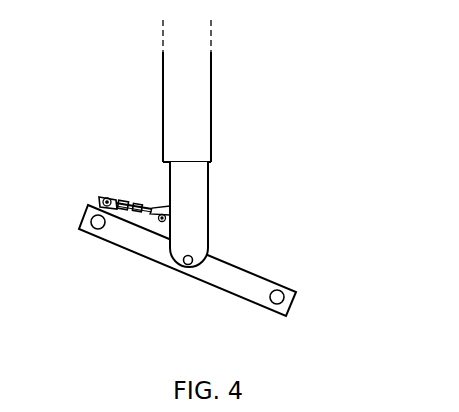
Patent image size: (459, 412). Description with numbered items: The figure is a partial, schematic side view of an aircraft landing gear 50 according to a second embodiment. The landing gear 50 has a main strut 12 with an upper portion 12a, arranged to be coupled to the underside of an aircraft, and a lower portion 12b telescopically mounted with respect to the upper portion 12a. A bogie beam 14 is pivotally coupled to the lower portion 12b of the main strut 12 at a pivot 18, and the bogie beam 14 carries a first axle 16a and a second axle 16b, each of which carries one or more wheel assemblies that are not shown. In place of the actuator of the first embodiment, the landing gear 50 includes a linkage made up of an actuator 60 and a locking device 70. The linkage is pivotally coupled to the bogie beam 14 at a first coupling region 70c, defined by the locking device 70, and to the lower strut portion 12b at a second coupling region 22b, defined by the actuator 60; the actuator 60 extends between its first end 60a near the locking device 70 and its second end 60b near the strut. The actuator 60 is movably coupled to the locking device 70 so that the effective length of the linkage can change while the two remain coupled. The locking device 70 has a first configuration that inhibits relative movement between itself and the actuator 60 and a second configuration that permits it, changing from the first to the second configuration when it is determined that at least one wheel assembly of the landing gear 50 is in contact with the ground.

The main strut 12 is at (219, 137).
The upper portion 12a is at (199, 94).
The lower portion 12b is at (197, 212).
The bogie beam 14 is at (242, 278).
The first axle 16a is at (92, 224).
The second axle 16b is at (283, 299).
The pivot pin 18 is at (192, 270).
The second coupling region 22b is at (170, 202).
The landing gear 50 is at (353, 108).
The actuator 60 is at (147, 199).
The first end of link 60a is at (122, 203).
The second end of link 60b is at (157, 210).
The locking device 70 is at (103, 196).
The first coupling region 70c is at (100, 201).